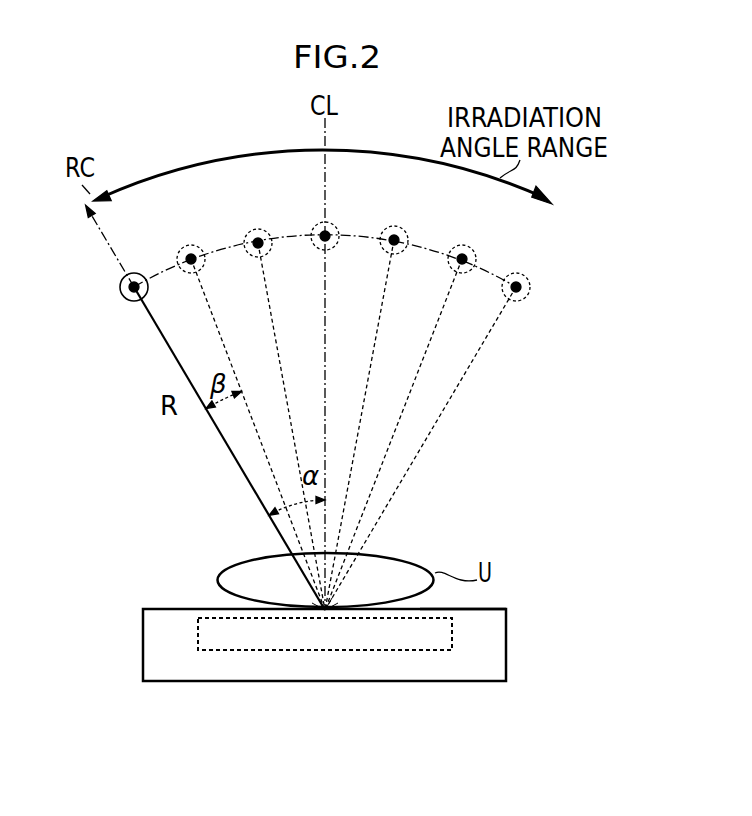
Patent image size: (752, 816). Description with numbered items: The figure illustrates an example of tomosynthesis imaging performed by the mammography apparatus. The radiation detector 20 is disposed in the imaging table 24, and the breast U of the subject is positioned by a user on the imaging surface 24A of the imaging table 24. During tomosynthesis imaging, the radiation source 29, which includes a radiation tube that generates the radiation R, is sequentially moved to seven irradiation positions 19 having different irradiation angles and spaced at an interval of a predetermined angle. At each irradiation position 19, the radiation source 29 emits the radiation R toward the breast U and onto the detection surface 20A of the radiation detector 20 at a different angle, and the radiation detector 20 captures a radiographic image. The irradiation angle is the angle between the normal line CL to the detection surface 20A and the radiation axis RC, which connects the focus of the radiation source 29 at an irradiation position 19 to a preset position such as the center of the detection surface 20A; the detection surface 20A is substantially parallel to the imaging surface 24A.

The irradiation position 19 is at (517, 250).
The radiation source 29 is at (130, 302).
The radiation detector 20 is at (413, 652).
The detection surface 20A is at (215, 615).
The imaging table 24 is at (506, 640).
The imaging surface 24A is at (486, 610).